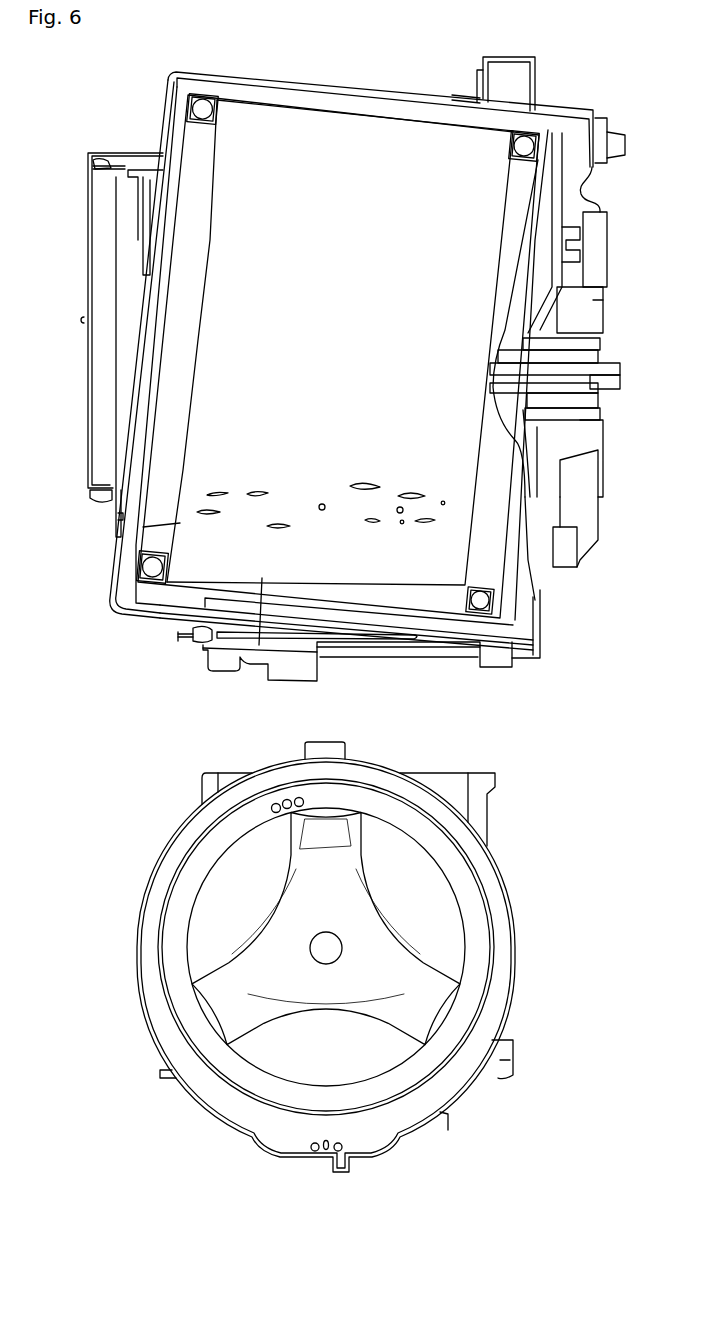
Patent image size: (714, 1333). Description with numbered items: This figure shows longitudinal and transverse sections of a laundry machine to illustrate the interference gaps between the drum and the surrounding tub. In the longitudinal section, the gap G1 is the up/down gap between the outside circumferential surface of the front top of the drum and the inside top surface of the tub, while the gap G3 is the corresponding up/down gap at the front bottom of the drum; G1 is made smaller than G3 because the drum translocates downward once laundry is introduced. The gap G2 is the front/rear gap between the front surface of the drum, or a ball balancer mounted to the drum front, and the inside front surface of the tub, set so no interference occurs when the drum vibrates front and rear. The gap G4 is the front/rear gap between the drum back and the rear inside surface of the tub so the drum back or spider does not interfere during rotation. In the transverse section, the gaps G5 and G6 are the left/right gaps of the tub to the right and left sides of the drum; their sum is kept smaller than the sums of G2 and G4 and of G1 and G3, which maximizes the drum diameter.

The gap G1 is at (205, 94).
The gap G2 is at (187, 112).
The gap G3 is at (150, 584).
The gap G4 is at (500, 605).
The gap G5 is at (200, 955).
The gap G6 is at (450, 955).